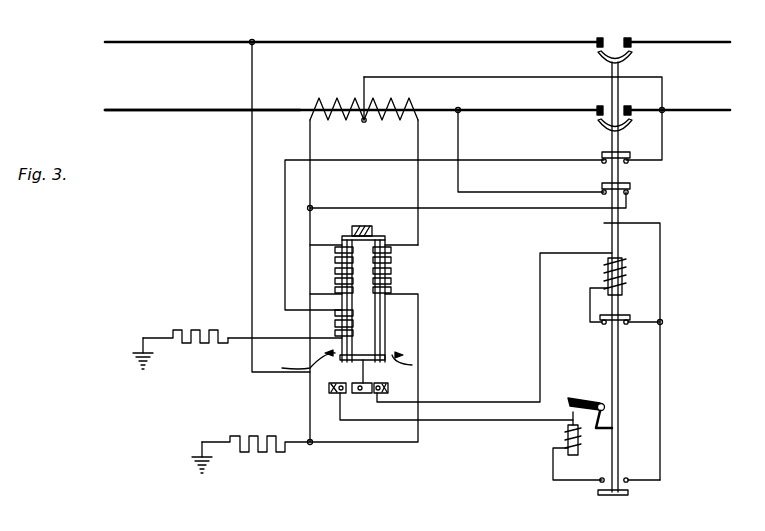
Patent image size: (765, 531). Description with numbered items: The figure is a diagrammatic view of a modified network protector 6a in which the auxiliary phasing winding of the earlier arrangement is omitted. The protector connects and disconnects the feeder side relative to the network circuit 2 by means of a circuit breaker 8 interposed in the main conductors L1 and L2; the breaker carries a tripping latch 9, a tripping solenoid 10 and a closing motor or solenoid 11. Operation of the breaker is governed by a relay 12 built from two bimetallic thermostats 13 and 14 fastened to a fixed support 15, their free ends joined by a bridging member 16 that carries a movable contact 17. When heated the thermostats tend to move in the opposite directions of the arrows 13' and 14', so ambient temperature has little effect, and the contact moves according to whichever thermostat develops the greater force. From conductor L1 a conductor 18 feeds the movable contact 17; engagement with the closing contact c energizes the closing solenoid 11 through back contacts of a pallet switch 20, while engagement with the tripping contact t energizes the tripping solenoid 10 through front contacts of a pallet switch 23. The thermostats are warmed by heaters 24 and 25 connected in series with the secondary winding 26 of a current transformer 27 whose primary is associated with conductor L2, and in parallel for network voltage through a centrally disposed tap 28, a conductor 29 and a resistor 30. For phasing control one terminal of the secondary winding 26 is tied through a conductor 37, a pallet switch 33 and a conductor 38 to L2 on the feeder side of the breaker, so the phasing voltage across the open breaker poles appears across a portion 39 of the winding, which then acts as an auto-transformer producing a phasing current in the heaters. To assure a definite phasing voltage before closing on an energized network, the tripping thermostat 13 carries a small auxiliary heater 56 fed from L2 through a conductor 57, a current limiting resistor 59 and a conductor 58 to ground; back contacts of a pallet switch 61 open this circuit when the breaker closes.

The network circuit 2 is at (727, 45).
The circuit breaker 8 is at (620, 243).
The tripping latch 9 is at (586, 400).
The tripping solenoid 10 is at (565, 440).
The closing motor or solenoid 11 is at (625, 279).
The relay 12 is at (408, 233).
The tripping thermostat 13 is at (358, 301).
The arrow 13' is at (296, 363).
The bimetallic thermostat 14 is at (392, 301).
The arrow 14' is at (416, 365).
The fixed support 15 is at (348, 236).
The bridging member 16 is at (374, 362).
The movable contact 17 is at (358, 396).
The conductor 18 is at (250, 222).
The pallet switch 20 is at (638, 312).
The pallet switch 23 is at (628, 496).
The heater 24 is at (334, 258).
The heater 25 is at (393, 275).
The secondary winding 26 is at (398, 103).
The current transformer 27 is at (296, 97).
The tap 28 is at (363, 122).
The conductor 29 is at (498, 80).
The resistor 30 is at (270, 425).
The pallet switch 33 is at (632, 186).
The conductor 37 is at (583, 208).
The conductor 38 is at (534, 184).
The portion of secondary winding 39 is at (335, 96).
The auxiliary heater 56 is at (334, 324).
The conductor 57 is at (512, 160).
The conductor 58 is at (267, 340).
The resistor 59 is at (200, 321).
The pallet switch 61 is at (629, 152).
The network protector 6a is at (512, 248).
The closing contact c is at (389, 388).
The tripping contact t is at (331, 394).
The conductor L1 is at (351, 30).
The conductor L2 is at (351, 98).